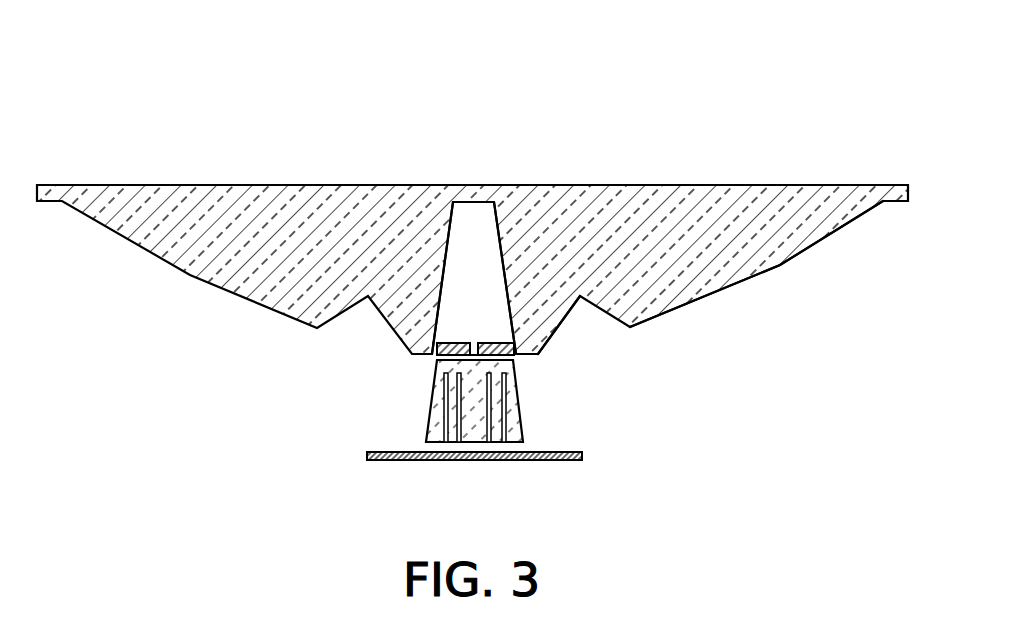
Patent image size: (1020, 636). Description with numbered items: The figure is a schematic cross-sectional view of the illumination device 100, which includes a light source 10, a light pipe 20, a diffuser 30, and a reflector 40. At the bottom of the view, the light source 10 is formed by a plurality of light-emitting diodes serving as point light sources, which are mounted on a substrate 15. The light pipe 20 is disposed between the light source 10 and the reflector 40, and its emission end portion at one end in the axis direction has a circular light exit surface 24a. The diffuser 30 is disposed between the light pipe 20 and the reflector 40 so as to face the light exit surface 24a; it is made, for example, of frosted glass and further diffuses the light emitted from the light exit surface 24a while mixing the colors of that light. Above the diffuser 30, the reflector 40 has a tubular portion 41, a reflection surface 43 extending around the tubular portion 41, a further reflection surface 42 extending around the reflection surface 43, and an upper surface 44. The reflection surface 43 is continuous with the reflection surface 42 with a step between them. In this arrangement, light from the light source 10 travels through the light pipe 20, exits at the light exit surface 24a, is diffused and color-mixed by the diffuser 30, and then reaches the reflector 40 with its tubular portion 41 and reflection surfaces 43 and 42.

The illumination device 100 is at (774, 97).
The reflector 40 is at (783, 269).
The upper surface 44 is at (275, 183).
The tubular portion 41 is at (504, 270).
The reflection surface 43 is at (559, 313).
The reflection surface 42 is at (688, 300).
The diffuser 30 is at (456, 343).
The light exit surface 24a is at (477, 343).
The light pipe 20 is at (514, 407).
The light source 10 is at (586, 456).
The substrate 15 is at (542, 462).